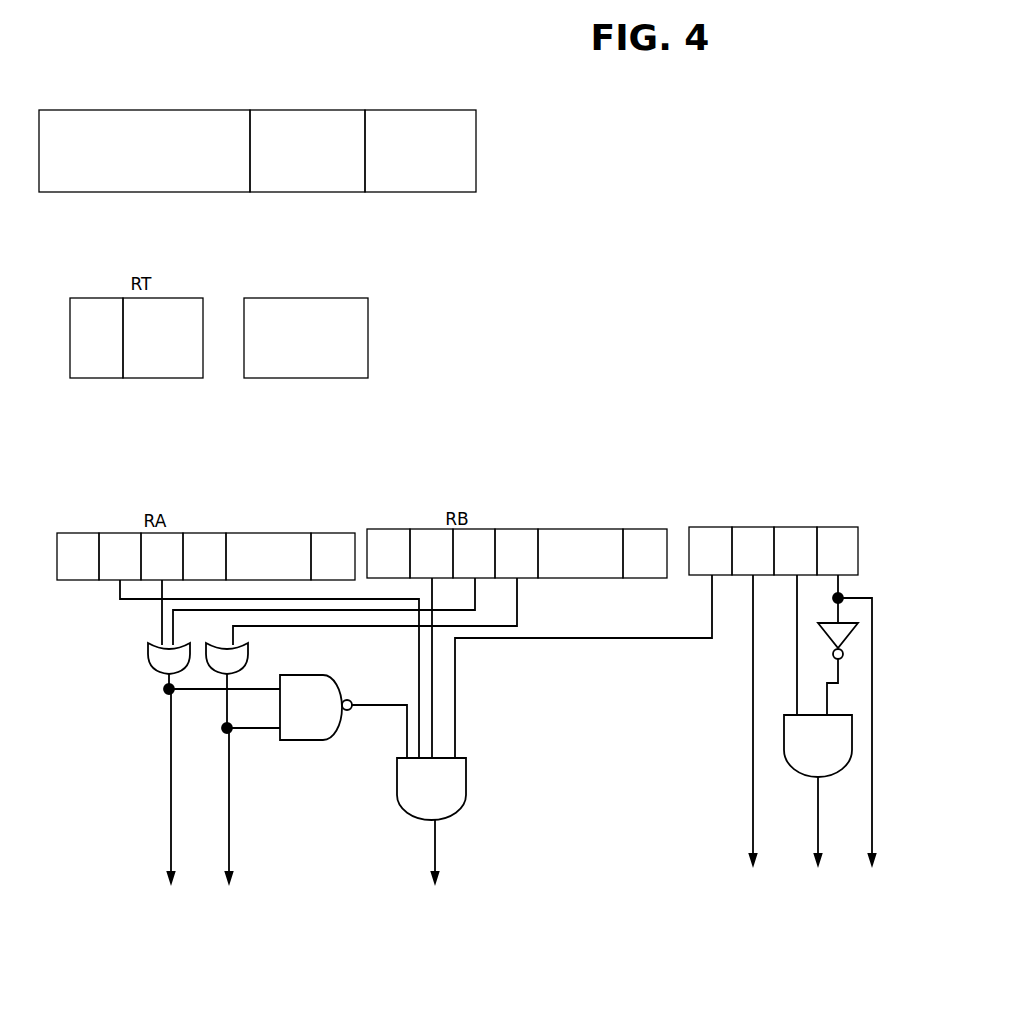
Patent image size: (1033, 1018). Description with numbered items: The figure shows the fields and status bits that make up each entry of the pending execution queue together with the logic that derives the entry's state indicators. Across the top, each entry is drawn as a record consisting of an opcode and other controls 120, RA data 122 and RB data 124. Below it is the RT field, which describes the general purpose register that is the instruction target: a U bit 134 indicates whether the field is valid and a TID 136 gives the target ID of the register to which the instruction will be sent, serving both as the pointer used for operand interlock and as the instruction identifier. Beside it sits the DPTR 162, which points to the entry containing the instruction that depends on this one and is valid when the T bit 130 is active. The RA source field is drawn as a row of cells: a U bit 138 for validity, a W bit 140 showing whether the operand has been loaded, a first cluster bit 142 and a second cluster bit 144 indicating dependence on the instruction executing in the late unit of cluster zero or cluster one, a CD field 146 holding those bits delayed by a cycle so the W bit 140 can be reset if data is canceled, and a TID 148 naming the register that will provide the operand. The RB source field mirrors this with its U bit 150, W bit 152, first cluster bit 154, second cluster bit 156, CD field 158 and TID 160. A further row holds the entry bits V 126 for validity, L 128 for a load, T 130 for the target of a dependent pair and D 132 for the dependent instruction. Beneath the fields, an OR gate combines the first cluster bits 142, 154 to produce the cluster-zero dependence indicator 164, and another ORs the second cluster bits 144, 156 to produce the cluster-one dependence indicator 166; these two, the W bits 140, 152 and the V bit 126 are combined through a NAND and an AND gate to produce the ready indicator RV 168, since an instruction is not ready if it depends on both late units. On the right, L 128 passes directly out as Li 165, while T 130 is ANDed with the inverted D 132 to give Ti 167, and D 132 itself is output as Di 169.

The opcode and other controls 120 is at (221, 104).
The RA data 122 is at (337, 104).
The RB data 124 is at (441, 104).
The V bit 126 is at (709, 524).
The L bit 128 is at (750, 524).
The T bit 130 is at (793, 524).
The D bit 132 is at (834, 524).
The U bit of RT 134 is at (96, 294).
The TID of RT 136 is at (190, 294).
The U bit of RA 138 is at (76, 530).
The W bit of RA 140 is at (118, 530).
The C0 bit of RA 142 is at (174, 530).
The C1 bit of RA 144 is at (218, 530).
The CD field of RA 146 is at (268, 530).
The TID of RA 148 is at (330, 530).
The U bit of RB 150 is at (381, 527).
The W bit of RB 152 is at (423, 527).
The C0 bit of RB 154 is at (483, 527).
The C1 bit of RB 156 is at (523, 527).
The CD field of RB 158 is at (581, 527).
The TID of RB 160 is at (641, 527).
The DPTR 162 is at (342, 294).
The Ci(0) indicator 164 is at (172, 929).
The Li indicator 165 is at (754, 910).
The Ci(1) indicator 166 is at (230, 929).
The Ti indicator 167 is at (819, 910).
The RV indicator 168 is at (436, 925).
The Di indicator 169 is at (873, 910).